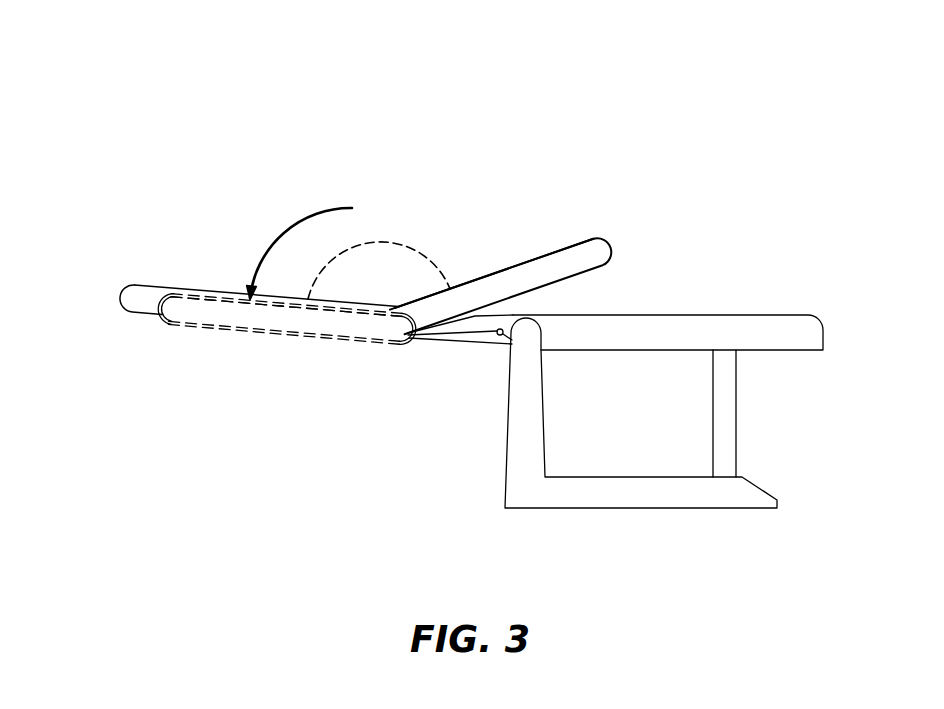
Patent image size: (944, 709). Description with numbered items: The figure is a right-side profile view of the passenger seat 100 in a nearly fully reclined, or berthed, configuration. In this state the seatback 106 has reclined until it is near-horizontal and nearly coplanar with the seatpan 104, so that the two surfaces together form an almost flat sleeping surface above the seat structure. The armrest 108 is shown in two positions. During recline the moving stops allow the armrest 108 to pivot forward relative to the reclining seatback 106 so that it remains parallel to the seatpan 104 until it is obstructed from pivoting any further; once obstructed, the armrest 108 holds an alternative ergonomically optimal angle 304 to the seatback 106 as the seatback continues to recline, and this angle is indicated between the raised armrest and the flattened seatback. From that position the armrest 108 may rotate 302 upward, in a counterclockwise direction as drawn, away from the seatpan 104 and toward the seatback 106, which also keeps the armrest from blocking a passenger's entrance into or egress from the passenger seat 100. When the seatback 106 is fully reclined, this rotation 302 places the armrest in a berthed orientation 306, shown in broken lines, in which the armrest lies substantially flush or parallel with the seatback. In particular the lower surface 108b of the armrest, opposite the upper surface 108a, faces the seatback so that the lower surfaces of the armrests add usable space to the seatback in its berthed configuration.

The passenger seat 100 is at (148, 92).
The seatpan 104 is at (763, 337).
The seatback 106 is at (146, 295).
The armrest 108 is at (593, 255).
The armrest surface 108a is at (553, 248).
The lower surface of the armrest 108b is at (225, 298).
The rotation of the armrests 302 is at (335, 212).
The ergonomically optimal angle 304 is at (395, 242).
The berthed orientation 306 is at (285, 320).